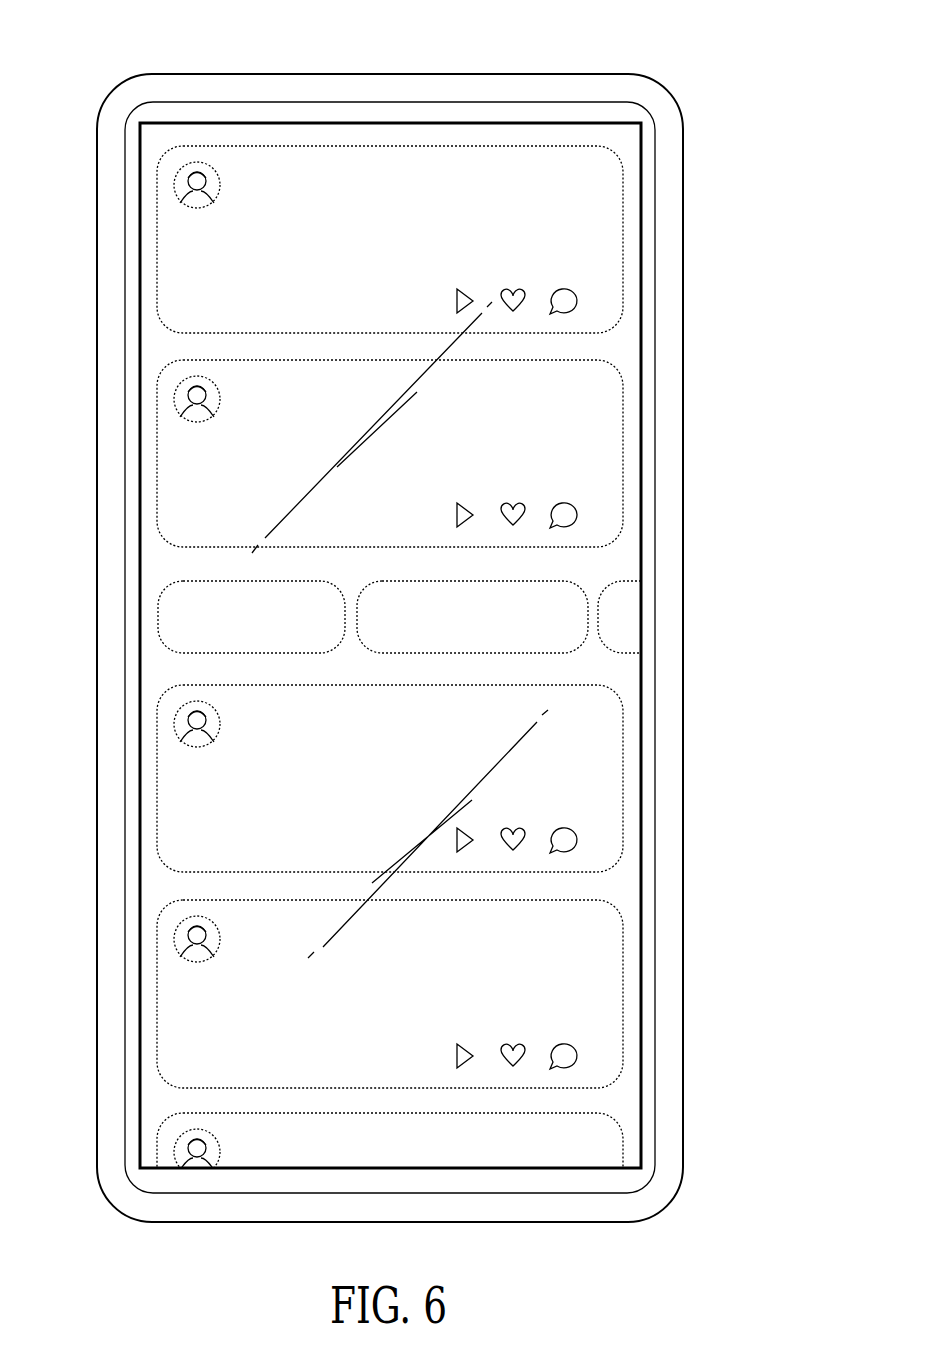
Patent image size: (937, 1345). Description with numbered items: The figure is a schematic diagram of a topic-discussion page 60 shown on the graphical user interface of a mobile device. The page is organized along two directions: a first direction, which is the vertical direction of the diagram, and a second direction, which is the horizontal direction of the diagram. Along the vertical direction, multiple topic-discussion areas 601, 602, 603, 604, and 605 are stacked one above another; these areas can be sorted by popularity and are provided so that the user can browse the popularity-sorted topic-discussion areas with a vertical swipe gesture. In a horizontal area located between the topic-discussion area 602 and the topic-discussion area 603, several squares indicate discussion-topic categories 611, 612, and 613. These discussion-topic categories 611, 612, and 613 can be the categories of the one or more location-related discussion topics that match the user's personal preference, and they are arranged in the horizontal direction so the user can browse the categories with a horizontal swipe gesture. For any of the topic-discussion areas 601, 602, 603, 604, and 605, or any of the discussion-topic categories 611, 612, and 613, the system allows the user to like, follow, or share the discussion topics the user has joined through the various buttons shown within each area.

The topic-discussion page 60 is at (700, 52).
The topic-discussion area 601 is at (617, 240).
The topic-discussion area 602 is at (612, 455).
The topic-discussion area 603 is at (612, 780).
The topic-discussion area 604 is at (612, 993).
The topic-discussion area 605 is at (390, 1206).
The discussion-topic category 611 is at (251, 617).
The discussion-topic category 612 is at (472, 617).
The discussion-topic category 613 is at (698, 617).